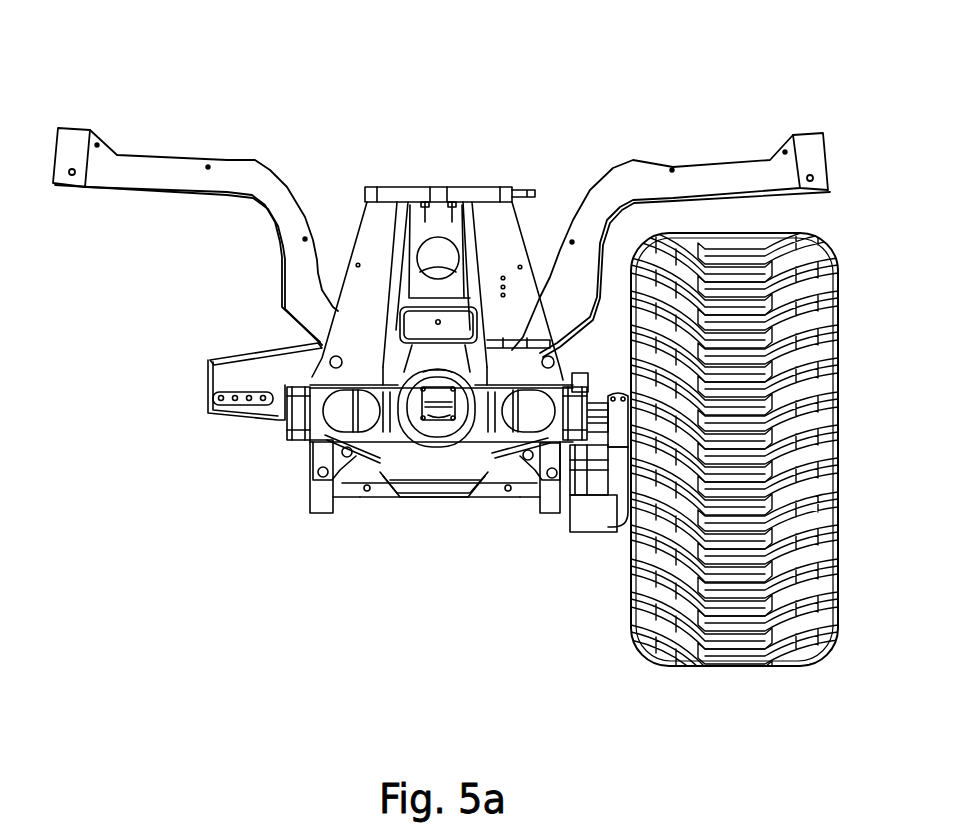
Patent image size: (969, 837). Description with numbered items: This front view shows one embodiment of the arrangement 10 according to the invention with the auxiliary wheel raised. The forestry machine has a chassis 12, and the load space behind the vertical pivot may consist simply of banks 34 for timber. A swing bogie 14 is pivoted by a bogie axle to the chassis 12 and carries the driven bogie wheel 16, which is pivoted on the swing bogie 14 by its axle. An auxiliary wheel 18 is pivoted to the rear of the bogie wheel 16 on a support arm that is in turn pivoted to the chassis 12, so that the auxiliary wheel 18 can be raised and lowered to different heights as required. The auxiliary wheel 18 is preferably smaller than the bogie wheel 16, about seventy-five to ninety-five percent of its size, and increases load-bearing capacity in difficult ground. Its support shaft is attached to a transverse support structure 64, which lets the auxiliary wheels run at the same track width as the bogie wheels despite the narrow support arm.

The axle assembly 10 is at (563, 128).
The chassis 12 is at (417, 516).
The swing bogie 14 is at (605, 546).
The bogie wheel 16 is at (786, 636).
The auxiliary wheel 18 is at (800, 268).
The banks 34 is at (711, 175).
The transverse support structure 64 is at (244, 371).